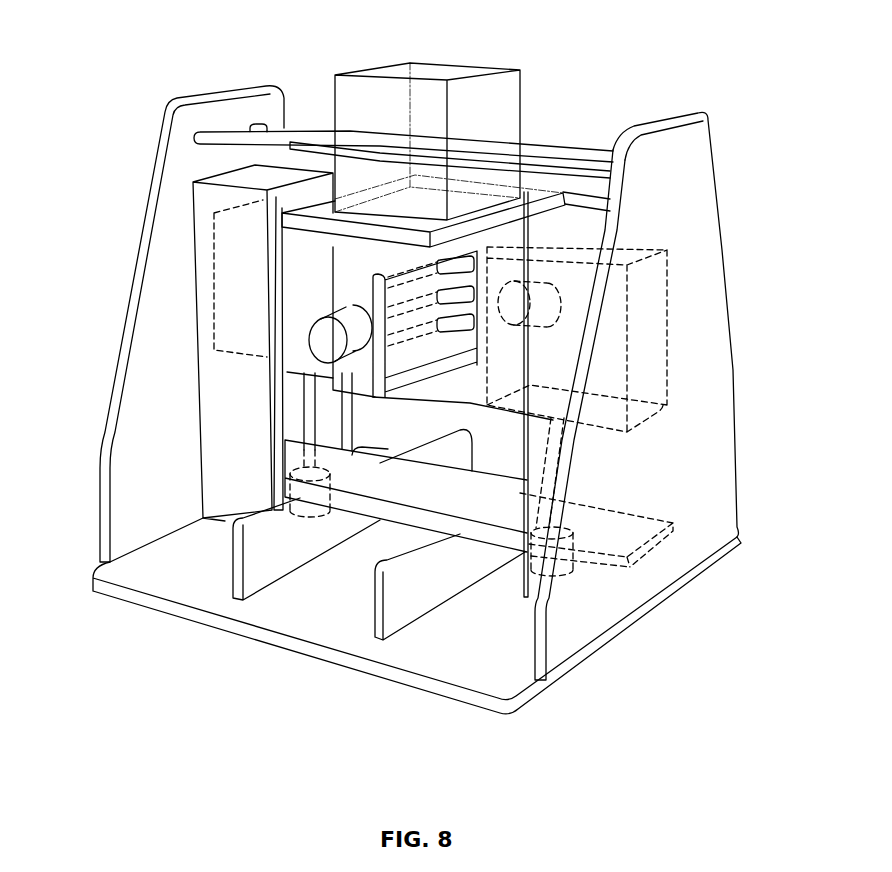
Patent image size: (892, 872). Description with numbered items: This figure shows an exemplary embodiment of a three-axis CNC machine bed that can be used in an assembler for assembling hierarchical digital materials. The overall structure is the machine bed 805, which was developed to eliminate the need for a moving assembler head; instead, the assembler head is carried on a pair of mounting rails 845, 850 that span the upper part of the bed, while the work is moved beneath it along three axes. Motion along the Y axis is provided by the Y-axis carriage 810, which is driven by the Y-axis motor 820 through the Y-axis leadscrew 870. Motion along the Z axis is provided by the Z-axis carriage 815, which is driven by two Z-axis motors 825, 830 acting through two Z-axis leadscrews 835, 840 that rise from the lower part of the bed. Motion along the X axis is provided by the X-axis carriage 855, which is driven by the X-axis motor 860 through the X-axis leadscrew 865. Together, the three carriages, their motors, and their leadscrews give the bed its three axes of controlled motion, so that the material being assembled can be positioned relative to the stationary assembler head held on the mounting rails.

The machine bed 805 is at (317, 207).
The Y-axis carriage 810 is at (337, 288).
The Z-axis carriage 815 is at (297, 293).
The Y-axis motor 820 is at (323, 347).
The Z-axis motor 825 is at (313, 517).
The Z-axis motor 830 is at (571, 572).
The Z-axis leadscrew 835 is at (307, 398).
The Z-axis leadscrew 840 is at (575, 460).
The mounting rail 845 is at (278, 127).
The mounting rail 850 is at (289, 150).
The X-axis carriage 855 is at (437, 280).
The X-axis motor 860 is at (560, 303).
The X-axis leadscrew 865 is at (462, 275).
The Y-axis leadscrew 870 is at (487, 353).